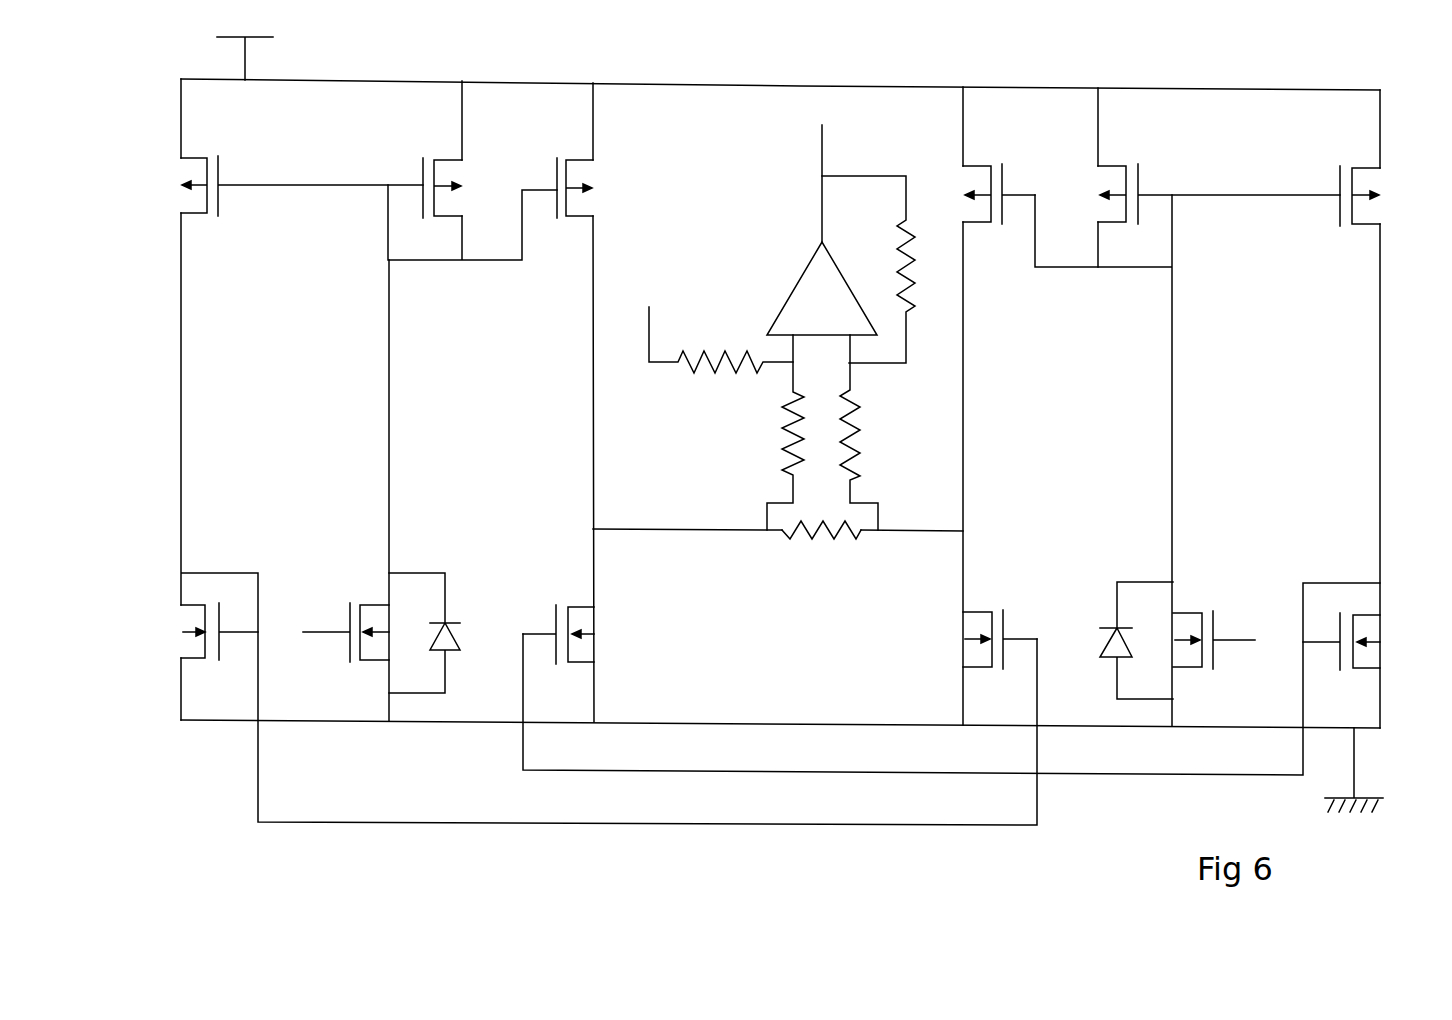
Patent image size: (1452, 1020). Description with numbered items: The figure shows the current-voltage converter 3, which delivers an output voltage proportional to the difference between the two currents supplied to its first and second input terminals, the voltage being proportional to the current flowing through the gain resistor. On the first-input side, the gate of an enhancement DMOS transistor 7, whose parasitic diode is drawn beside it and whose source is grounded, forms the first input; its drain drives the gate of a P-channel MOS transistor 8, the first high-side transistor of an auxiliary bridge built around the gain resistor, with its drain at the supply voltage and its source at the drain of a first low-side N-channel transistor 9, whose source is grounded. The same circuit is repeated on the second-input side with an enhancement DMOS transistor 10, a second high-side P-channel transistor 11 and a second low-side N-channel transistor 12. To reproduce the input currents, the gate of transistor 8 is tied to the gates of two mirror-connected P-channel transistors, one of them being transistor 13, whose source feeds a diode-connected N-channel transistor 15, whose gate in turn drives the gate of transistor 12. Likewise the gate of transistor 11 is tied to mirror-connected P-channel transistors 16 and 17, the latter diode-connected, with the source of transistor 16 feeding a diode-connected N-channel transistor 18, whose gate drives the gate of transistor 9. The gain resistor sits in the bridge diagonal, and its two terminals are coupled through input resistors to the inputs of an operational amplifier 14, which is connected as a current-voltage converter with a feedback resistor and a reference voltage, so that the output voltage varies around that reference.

The current-voltage converter 3 is at (845, 66).
The operational amplifier 14 is at (792, 301).
The mirror-connected P-channel MOS transistor 13 is at (270, 185).
The first high-side P-channel MOS transistor 8 is at (600, 186).
The second high-side P-channel MOS transistor 11 is at (974, 190).
The diode-connected P-channel MOS transistor 17 is at (1191, 190).
The mirror-connected P-channel MOS transistor 16 is at (1388, 191).
The diode-connected N-channel MOS transistor 15 is at (190, 631).
The enhancement DMOS transistor 7 is at (346, 647).
The first low-side N-channel MOS transistor 9 is at (585, 634).
The second low-side N-channel MOS transistor 12 is at (965, 639).
The enhancement DMOS transistor 10 is at (1214, 656).
The diode-connected N-channel MOS transistor 18 is at (1371, 641).